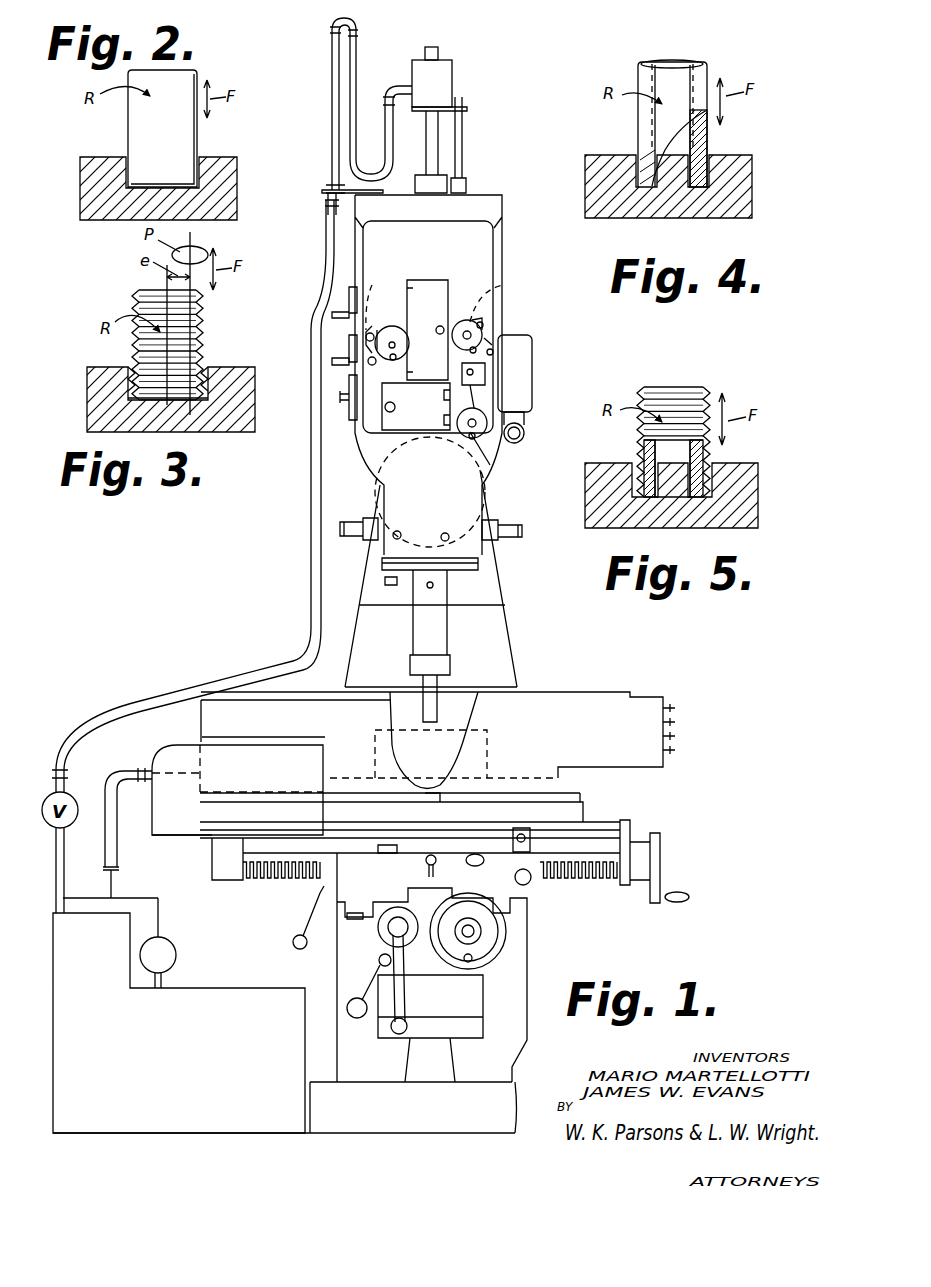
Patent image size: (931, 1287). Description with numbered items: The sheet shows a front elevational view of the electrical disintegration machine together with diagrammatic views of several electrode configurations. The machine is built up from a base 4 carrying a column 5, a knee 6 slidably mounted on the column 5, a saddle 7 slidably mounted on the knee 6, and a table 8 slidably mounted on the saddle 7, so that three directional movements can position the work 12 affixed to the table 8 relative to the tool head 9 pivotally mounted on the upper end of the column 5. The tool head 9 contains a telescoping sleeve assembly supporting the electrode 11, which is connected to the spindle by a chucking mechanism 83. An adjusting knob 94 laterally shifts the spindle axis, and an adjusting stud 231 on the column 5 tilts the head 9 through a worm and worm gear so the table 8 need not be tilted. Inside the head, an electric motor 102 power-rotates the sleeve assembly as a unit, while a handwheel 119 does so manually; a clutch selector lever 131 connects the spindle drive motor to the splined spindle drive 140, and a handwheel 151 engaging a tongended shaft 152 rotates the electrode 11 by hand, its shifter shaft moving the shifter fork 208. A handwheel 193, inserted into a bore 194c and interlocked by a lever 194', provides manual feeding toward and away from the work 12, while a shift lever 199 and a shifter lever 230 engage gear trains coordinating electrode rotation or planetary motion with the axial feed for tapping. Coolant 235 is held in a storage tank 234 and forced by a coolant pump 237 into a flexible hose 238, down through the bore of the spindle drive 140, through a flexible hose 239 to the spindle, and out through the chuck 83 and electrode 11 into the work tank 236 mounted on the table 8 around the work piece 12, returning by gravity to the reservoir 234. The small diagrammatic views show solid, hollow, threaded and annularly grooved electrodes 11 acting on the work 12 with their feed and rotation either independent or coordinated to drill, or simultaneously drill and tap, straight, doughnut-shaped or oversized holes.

In FIG. 1, the base 4 is at (318, 1113).
In FIG. 1, the column 5 is at (527, 937).
In FIG. 1, the knee 6 is at (476, 988).
In FIG. 1, the saddle 7 is at (318, 892).
In FIG. 1, the table 8 is at (572, 815).
In FIG. 1, the tool head 9 is at (502, 247).
In FIG. 2, the electrode 11 is at (197, 76).
In FIG. 3, the electrode 11 is at (204, 359).
In FIG. 4, the electrode 11 is at (678, 74).
In FIG. 5, the electrode 11 is at (672, 388).
In FIG. 1, the electrode 11 is at (428, 694).
In FIG. 2, the work piece 12 is at (233, 207).
In FIG. 3, the work piece 12 is at (252, 410).
In FIG. 4, the work piece 12 is at (752, 186).
In FIG. 5, the work piece 12 is at (758, 520).
In FIG. 1, the work piece 12 is at (456, 746).
In FIG. 1, the chucking mechanism 83 is at (410, 592).
In FIG. 1, the second adjusting knob 94 is at (385, 581).
In FIG. 1, the electric motor 102 is at (525, 438).
In FIG. 1, the handwheel 119 is at (485, 445).
In FIG. 1, the clutch selector lever 131 is at (349, 298).
In FIG. 1, the splined spindle drive 140 is at (440, 167).
In FIG. 1, the handwheel 151 is at (391, 326).
In FIG. 1, the tongended shaft 152 is at (385, 285).
In FIG. 1, the handwheel 193 is at (482, 330).
In FIG. 1, the bore 194c is at (508, 296).
In FIG. 1, the lever 194' is at (524, 326).
In FIG. 1, the shift lever 199 is at (336, 366).
In FIG. 1, the shifter fork 208 is at (349, 350).
In FIG. 1, the shifter lever 230 is at (490, 377).
In FIG. 1, the adjusting stud 231 is at (340, 530).
In FIG. 1, the coolant storage tank 234 is at (148, 1130).
In FIG. 1, the coolant 235 is at (478, 684).
In FIG. 1, the work tank 236 is at (585, 706).
In FIG. 1, the coolant pump 237 is at (128, 934).
In FIG. 1, the flexible hose 238 is at (311, 513).
In FIG. 1, the flexible hose 239 is at (120, 822).